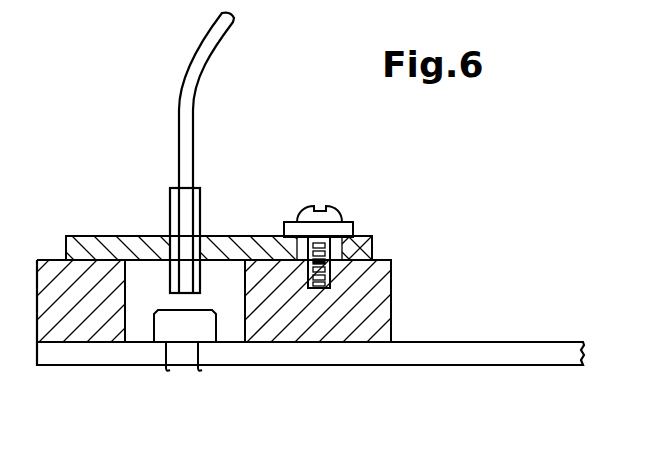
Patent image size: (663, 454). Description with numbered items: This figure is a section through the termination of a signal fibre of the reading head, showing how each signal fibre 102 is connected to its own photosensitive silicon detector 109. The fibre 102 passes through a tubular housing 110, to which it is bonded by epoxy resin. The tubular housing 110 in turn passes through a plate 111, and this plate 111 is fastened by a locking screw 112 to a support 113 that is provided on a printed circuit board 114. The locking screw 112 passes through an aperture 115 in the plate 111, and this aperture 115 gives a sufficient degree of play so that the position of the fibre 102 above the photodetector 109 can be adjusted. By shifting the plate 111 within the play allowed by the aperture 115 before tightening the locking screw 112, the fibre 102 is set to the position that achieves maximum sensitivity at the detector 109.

The signal fibre 102 is at (199, 52).
The photosensitive silicon detector 109 is at (167, 330).
The tubular housing 110 is at (170, 200).
The plate 111 is at (373, 250).
The locking screw 112 is at (336, 208).
The support 113 is at (392, 306).
The printed circuit board 114 is at (521, 339).
The aperture 115 is at (363, 238).